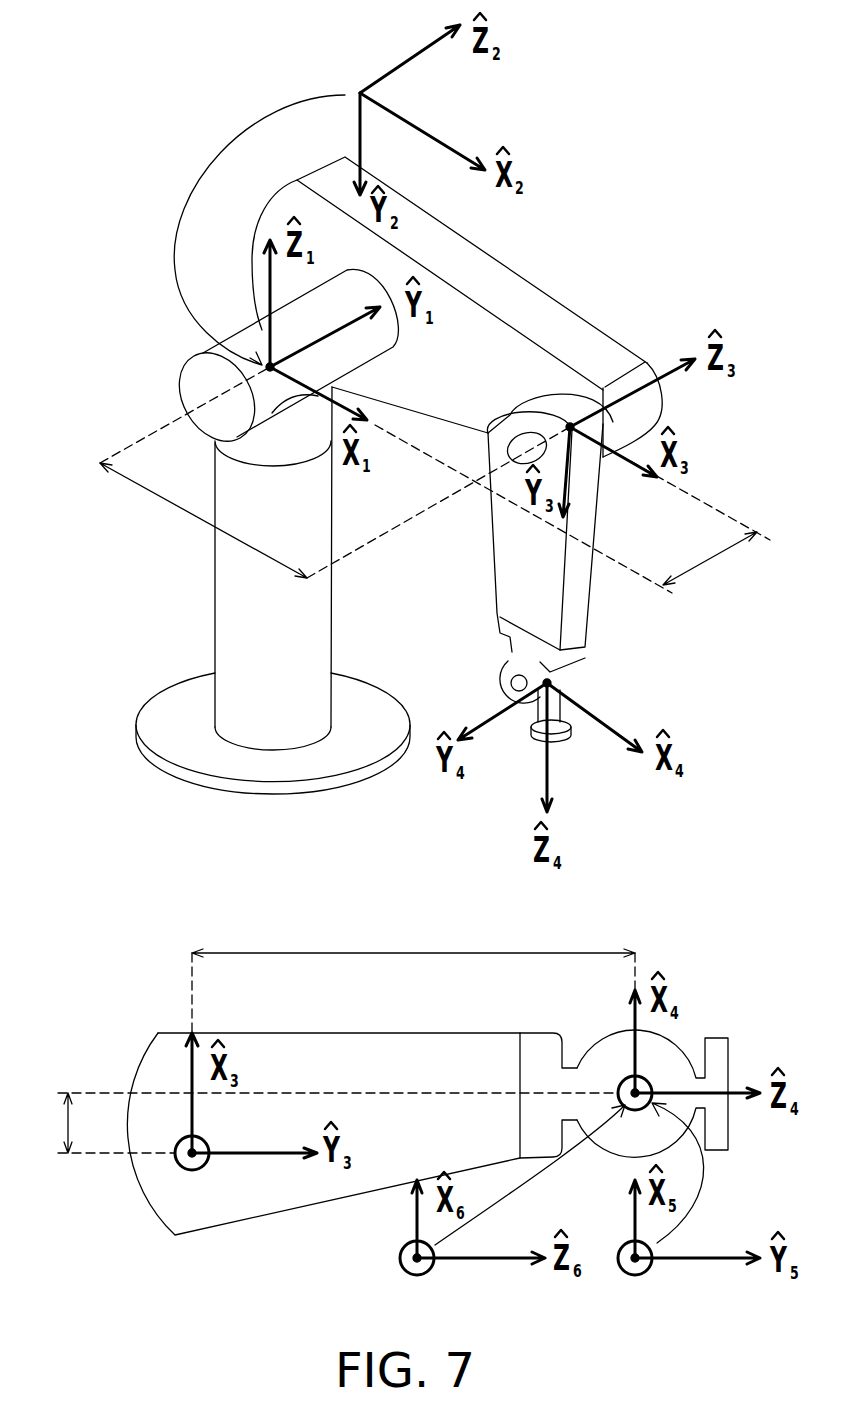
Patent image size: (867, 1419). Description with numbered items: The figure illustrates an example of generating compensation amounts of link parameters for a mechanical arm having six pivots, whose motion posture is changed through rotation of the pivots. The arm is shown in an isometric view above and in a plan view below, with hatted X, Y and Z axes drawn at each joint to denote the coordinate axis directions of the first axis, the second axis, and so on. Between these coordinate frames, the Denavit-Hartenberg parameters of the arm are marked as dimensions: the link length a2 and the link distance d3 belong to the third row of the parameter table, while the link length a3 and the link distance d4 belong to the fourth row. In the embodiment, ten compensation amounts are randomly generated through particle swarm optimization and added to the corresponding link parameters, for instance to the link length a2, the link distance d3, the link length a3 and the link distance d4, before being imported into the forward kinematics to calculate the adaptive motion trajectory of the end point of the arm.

The link length a2 is at (203, 520).
The link distance d3 is at (710, 565).
The link distance d4 is at (413, 935).
The link length a3 is at (50, 1123).